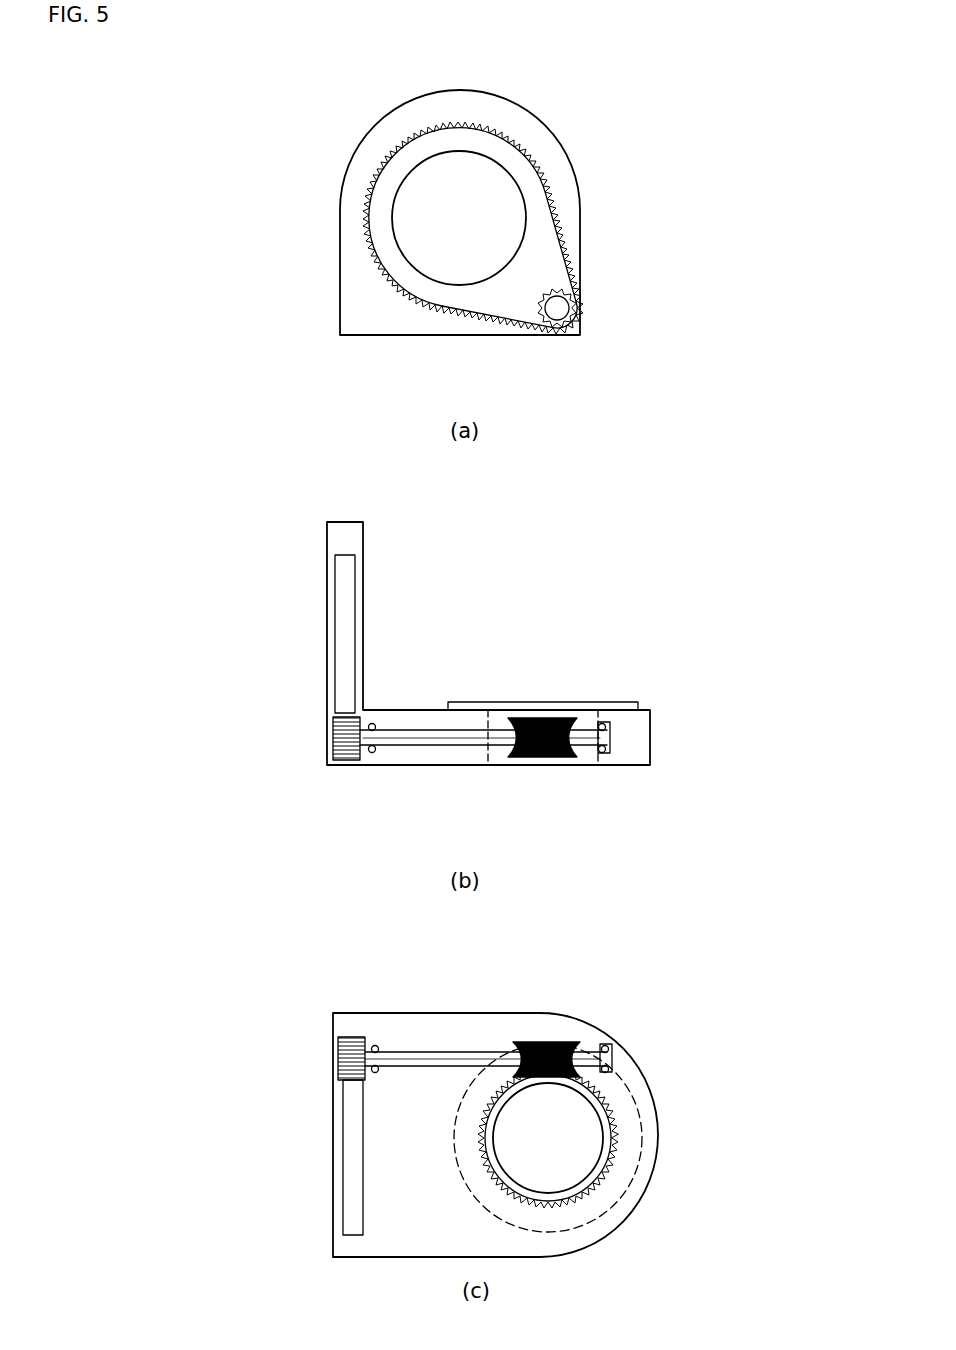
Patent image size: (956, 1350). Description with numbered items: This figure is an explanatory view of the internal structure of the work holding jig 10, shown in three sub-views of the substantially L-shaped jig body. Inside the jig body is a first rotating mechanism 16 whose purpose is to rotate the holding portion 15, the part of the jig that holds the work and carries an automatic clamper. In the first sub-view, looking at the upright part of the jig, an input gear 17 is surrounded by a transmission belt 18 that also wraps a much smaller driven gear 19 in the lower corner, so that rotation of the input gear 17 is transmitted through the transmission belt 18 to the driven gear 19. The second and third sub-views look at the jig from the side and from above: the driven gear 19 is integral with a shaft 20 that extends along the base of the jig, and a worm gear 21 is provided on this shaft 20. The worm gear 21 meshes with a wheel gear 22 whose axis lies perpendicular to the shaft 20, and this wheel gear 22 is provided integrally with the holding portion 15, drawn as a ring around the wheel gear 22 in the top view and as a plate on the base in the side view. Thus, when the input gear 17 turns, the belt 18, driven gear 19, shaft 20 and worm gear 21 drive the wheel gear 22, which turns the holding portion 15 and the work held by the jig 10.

The work holding jig 10 is at (552, 98).
The holding portion 15 is at (565, 705).
The first rotating mechanism 16 is at (551, 188).
The input gear 17 is at (426, 147).
The transmission belt 18 is at (491, 318).
The driven gear 19 is at (560, 306).
The shaft 20 is at (472, 735).
The worm gear 21 is at (553, 756).
The wheel gear 22 is at (612, 1122).